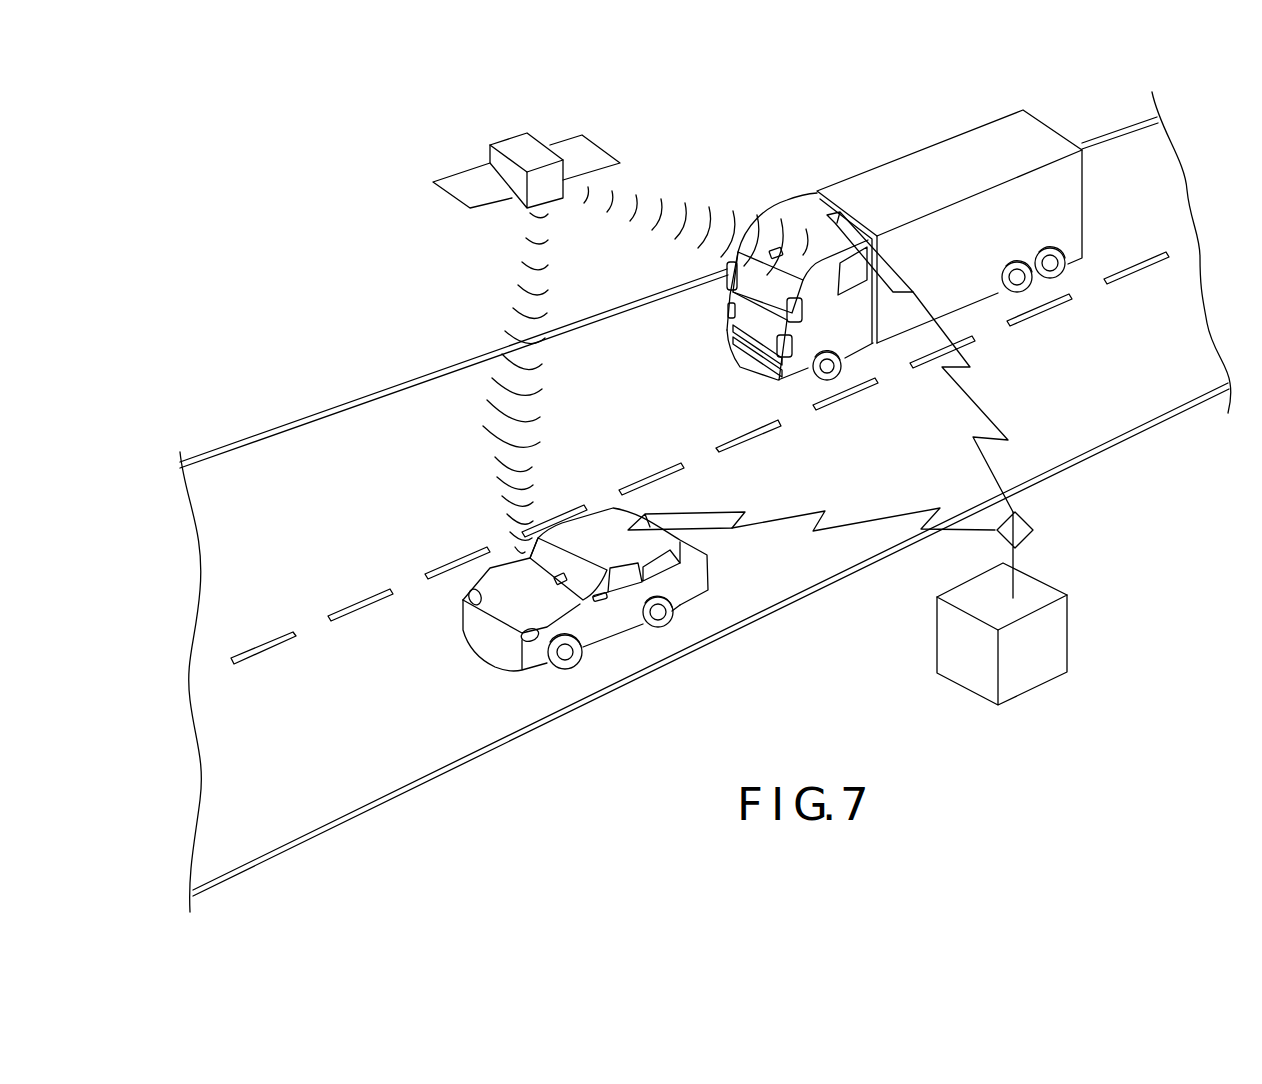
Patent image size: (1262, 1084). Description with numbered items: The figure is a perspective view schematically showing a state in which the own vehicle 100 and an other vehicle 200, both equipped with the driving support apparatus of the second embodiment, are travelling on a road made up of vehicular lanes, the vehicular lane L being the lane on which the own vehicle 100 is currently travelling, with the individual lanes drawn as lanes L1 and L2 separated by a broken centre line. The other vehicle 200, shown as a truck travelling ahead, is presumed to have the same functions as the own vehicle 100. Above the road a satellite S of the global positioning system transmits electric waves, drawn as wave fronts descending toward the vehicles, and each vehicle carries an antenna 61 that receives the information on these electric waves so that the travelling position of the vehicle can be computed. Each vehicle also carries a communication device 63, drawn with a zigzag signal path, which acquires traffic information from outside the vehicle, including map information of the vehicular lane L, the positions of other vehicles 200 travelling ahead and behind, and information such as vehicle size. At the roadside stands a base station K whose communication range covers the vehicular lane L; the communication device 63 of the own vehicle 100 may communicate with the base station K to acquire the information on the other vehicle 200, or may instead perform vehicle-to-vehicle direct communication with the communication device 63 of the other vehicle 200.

The satellite S is at (513, 143).
The vehicular lane L is at (344, 515).
The vehicular lane L1 is at (443, 735).
The vehicular lane L2 is at (383, 448).
The antenna 61 is at (777, 249).
The communication device 63 is at (841, 211).
The own vehicle 100 is at (697, 583).
The other vehicle 200 is at (908, 173).
The base station K is at (967, 673).